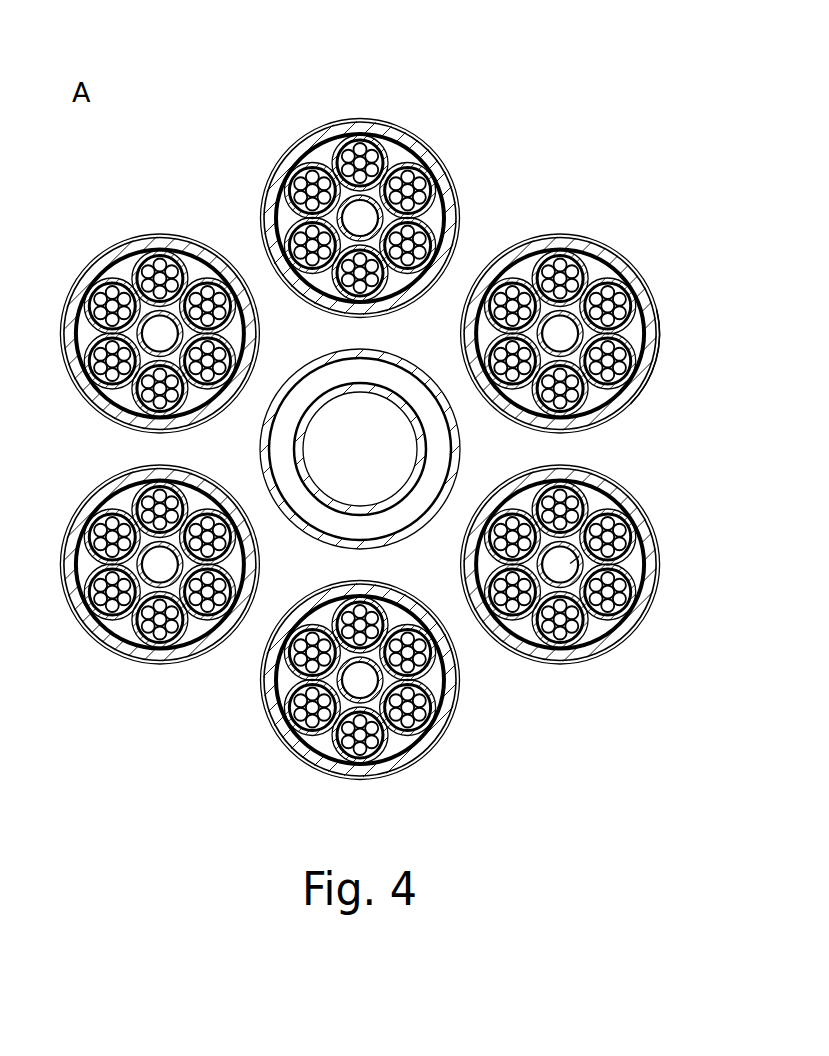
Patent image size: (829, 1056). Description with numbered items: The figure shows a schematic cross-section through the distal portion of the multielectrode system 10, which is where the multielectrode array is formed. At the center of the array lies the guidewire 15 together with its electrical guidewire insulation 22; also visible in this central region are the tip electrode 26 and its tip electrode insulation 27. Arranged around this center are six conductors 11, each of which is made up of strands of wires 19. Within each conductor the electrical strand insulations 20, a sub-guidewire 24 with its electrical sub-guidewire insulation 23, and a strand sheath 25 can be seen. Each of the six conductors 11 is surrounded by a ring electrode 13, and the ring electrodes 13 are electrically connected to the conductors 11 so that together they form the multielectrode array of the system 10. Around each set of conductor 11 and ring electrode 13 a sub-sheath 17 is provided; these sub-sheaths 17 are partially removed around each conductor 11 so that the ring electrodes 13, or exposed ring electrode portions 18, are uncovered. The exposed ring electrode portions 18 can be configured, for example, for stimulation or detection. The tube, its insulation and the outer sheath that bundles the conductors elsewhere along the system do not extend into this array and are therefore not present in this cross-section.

The multielectrode system 10 is at (632, 80).
The conductor 11 is at (617, 228).
The ring electrode 13 is at (620, 250).
The guidewire 15 is at (363, 417).
The sub-sheath 17 is at (640, 273).
The ring electrode portion 18 is at (662, 320).
The strands of wires 19 is at (648, 370).
The electrical strand insulation 20 is at (645, 383).
The electrical guidewire insulation 22 is at (422, 452).
The electrical sub-guidewire insulation 23 is at (597, 613).
The sub-guidewire 24 is at (660, 580).
The strand sheath 25 is at (627, 403).
The tip electrode 26 is at (390, 522).
The tip electrode insulation 27 is at (316, 540).